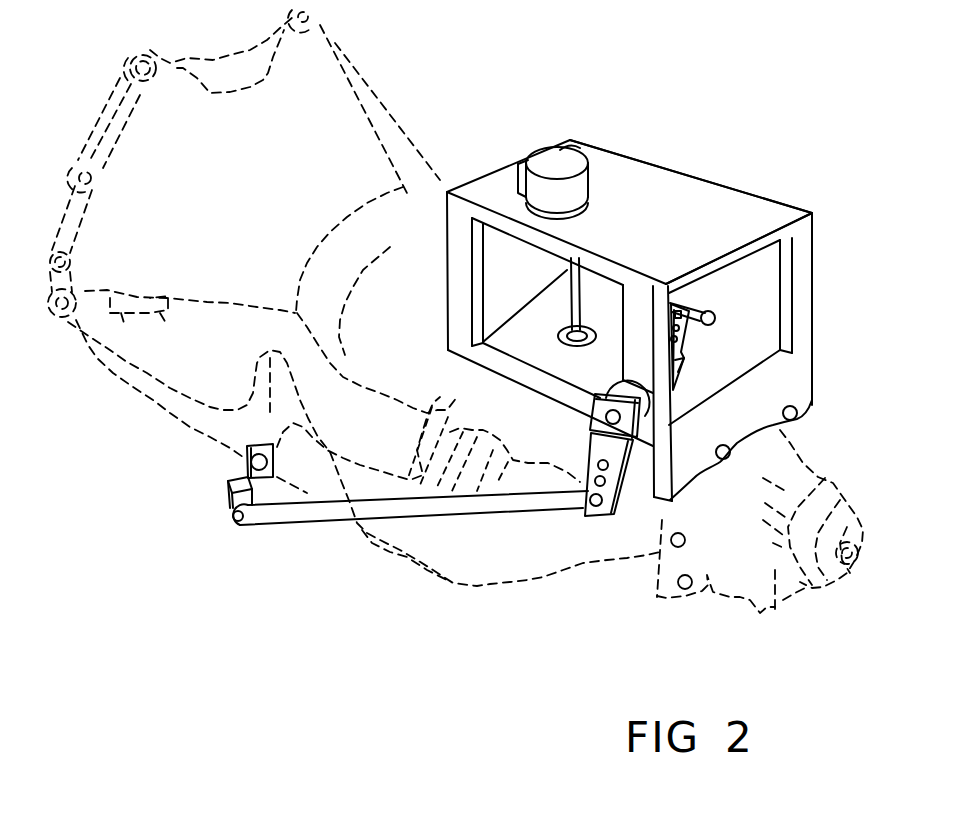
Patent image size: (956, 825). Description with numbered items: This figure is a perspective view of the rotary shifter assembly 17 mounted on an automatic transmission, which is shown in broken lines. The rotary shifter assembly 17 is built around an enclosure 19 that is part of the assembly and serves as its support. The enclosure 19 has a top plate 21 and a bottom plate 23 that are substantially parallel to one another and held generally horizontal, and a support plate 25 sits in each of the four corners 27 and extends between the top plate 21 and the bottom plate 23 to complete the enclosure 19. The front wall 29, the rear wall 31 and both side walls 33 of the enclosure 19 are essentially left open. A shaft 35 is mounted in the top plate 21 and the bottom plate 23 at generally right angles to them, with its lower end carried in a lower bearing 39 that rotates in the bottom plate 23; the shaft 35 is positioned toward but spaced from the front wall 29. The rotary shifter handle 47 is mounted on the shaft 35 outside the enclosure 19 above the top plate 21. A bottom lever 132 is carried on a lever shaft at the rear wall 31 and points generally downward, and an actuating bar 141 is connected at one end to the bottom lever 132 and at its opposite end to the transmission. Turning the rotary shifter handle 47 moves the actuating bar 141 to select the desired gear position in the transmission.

The rotary shifter assembly 17 is at (803, 332).
The enclosure 19 is at (627, 157).
The top plate 21 is at (700, 195).
The bottom plate 23 is at (545, 365).
The support plate 25 is at (462, 285).
The corners 27 is at (815, 253).
The front wall 29 is at (562, 148).
The rear wall 31 is at (795, 232).
The side walls 33 is at (458, 238).
The shaft 35 is at (567, 277).
The lower bearing 39 is at (567, 332).
The rotary shifter handle 47 is at (553, 162).
The bottom lever 132 is at (610, 447).
The actuating bar 141 is at (357, 510).